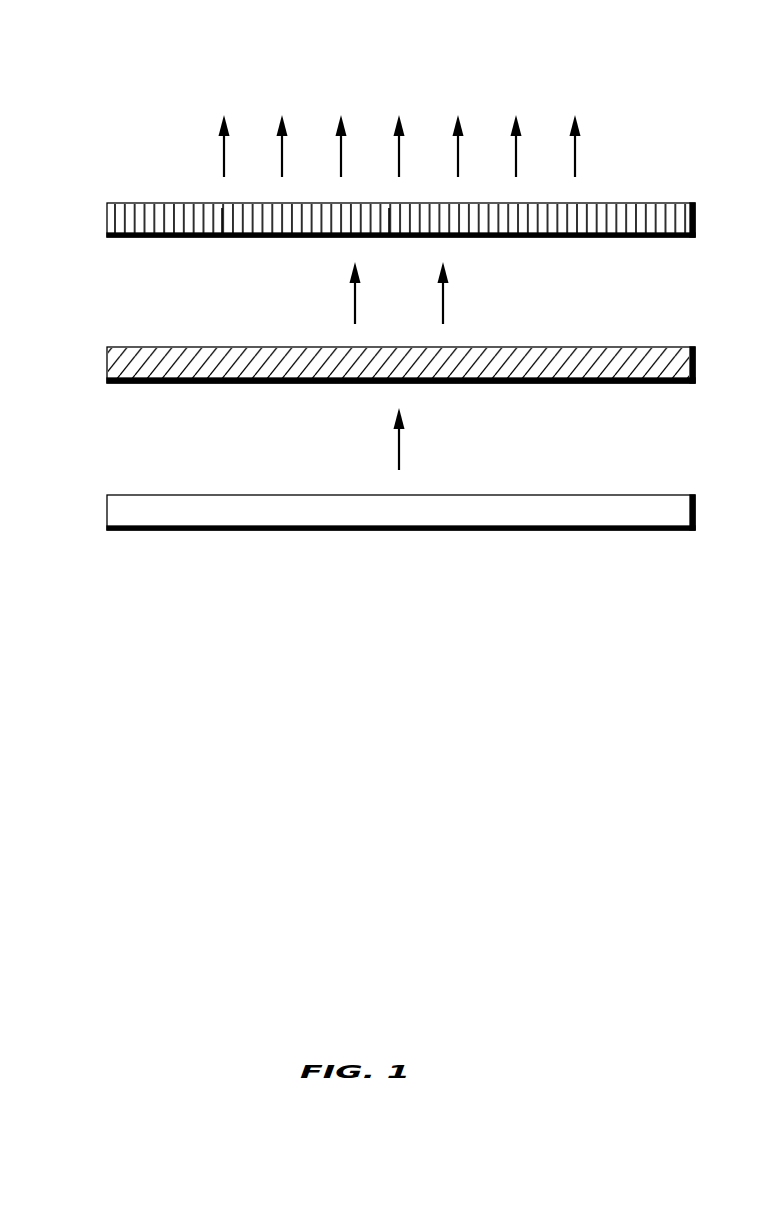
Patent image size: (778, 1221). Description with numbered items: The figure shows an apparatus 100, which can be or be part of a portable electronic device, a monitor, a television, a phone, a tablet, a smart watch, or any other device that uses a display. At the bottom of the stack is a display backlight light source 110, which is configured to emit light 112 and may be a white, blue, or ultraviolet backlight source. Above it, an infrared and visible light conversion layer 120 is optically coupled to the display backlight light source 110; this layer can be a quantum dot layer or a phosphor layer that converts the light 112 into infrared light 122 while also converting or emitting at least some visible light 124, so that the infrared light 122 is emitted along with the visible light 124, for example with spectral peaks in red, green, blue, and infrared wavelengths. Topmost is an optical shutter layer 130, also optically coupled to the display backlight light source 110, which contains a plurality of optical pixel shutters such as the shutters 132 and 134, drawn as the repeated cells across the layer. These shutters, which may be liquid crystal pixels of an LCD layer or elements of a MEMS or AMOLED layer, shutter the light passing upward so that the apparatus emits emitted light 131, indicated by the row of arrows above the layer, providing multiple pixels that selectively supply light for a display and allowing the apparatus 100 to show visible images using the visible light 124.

The apparatus 100 is at (690, 68).
The display backlight light source 110 is at (106, 511).
The light 112 is at (398, 448).
The infrared and visible light conversion layer 120 is at (106, 363).
The infrared light 122 is at (354, 304).
The visible light 124 is at (444, 304).
The optical shutter layer 130 is at (106, 219).
The emitted light 131 is at (222, 160).
The optical pixel shutter 132 is at (224, 224).
The optical pixel shutter 134 is at (388, 230).